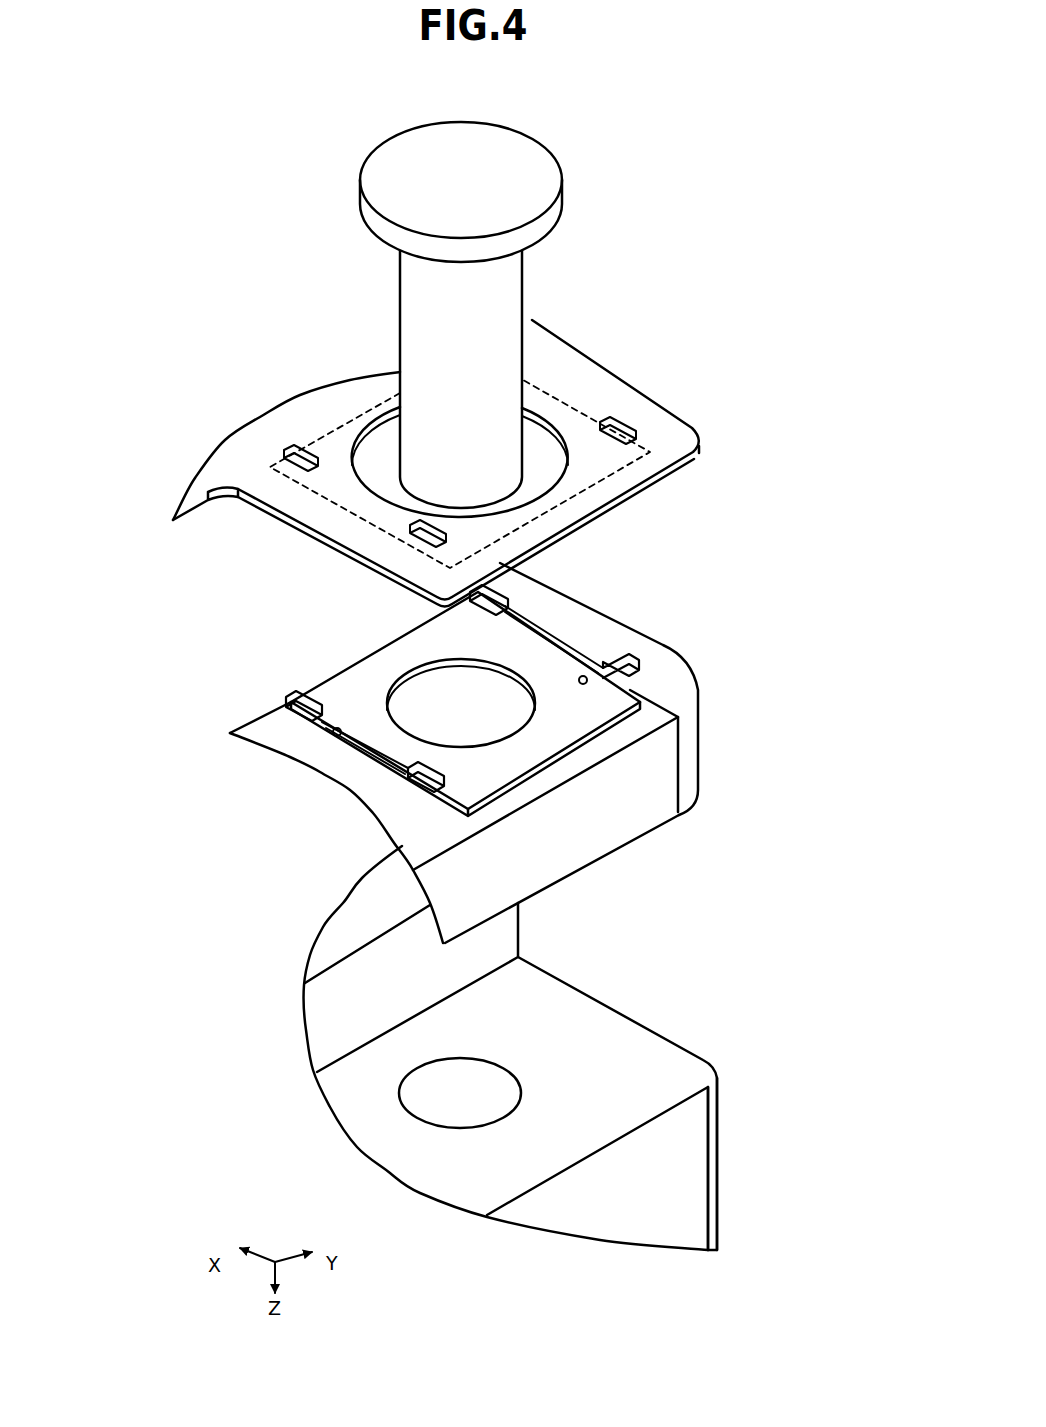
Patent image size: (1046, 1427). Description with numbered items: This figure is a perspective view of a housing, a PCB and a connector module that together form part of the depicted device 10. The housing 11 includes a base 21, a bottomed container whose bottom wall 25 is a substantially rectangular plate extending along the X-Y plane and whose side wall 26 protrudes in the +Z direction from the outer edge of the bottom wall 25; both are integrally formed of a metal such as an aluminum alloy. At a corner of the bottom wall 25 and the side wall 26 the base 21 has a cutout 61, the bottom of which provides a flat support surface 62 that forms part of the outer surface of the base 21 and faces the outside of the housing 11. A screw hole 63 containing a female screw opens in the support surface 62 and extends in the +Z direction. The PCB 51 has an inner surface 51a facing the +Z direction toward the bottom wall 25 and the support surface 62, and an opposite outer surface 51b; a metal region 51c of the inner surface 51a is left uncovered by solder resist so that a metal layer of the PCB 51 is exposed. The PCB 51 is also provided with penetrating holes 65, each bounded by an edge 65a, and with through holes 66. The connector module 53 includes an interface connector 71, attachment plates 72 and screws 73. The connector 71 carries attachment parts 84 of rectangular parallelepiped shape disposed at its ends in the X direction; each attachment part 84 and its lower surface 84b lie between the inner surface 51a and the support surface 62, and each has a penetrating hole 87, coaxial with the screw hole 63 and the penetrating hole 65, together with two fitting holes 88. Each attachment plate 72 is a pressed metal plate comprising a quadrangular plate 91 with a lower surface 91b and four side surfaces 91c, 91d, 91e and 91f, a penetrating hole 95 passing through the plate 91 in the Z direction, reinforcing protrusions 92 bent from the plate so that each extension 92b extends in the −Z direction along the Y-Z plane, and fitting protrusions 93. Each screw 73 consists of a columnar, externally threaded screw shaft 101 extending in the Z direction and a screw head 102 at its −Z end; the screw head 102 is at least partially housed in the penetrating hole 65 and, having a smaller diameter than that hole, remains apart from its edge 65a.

The mounting structure 10 is at (146, 154).
The housing 11 is at (449, 991).
The base 21 is at (449, 991).
The bottom wall 25 is at (347, 918).
The side wall 26 is at (717, 1212).
The PCB 51 is at (481, 428).
The inner surface 51a is at (481, 428).
The outer surface 51b is at (481, 428).
The metal region 51c is at (583, 362).
The connector module 53 is at (523, 753).
The cutout 61 is at (586, 1103).
The support surface 62 is at (612, 1030).
The screw hole 63 is at (452, 1112).
The penetrating hole 65 is at (335, 371).
The edge 65a is at (400, 412).
The through hole 66 is at (614, 423).
The interface connector 71 is at (523, 753).
The attachment plate 72 is at (374, 704).
The screw 73 is at (511, 192).
The attachment part 84 is at (523, 753).
The lower surface 84b is at (704, 680).
The penetrating hole 87 is at (330, 690).
The fitting hole 88 is at (453, 690).
The plate 91 is at (374, 704).
The lower surface 91b is at (286, 697).
The side surface 91c is at (453, 690).
The side surface 91d is at (378, 774).
The side surface 91e is at (556, 757).
The side surface 91f is at (422, 658).
The reinforcing protrusion 92 is at (466, 709).
The extension 92b is at (286, 712).
The fitting protrusion 93 is at (334, 734).
The penetrating hole 95 is at (365, 658).
The screw shaft 101 is at (505, 290).
The screw head 102 is at (565, 143).